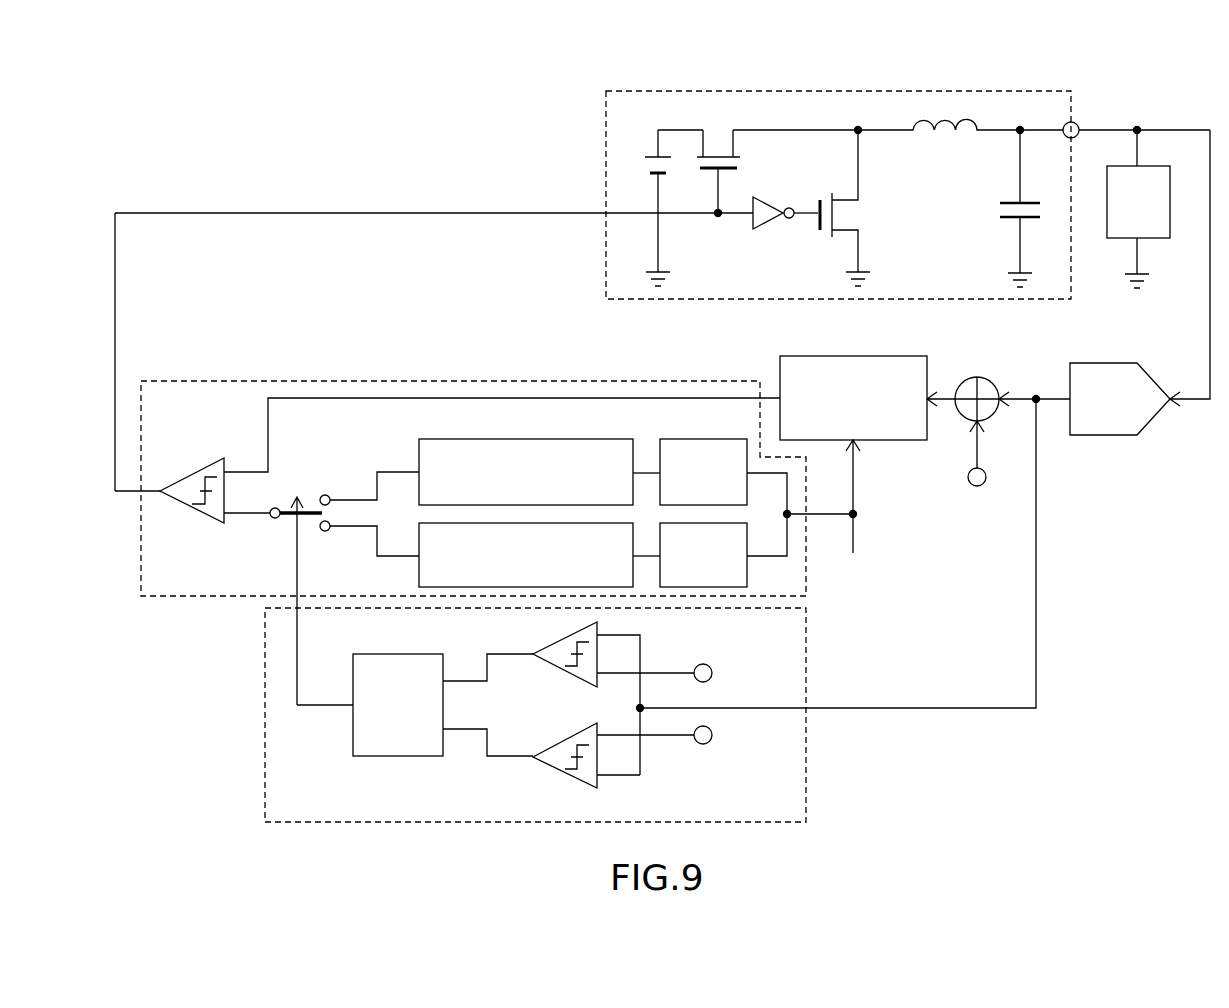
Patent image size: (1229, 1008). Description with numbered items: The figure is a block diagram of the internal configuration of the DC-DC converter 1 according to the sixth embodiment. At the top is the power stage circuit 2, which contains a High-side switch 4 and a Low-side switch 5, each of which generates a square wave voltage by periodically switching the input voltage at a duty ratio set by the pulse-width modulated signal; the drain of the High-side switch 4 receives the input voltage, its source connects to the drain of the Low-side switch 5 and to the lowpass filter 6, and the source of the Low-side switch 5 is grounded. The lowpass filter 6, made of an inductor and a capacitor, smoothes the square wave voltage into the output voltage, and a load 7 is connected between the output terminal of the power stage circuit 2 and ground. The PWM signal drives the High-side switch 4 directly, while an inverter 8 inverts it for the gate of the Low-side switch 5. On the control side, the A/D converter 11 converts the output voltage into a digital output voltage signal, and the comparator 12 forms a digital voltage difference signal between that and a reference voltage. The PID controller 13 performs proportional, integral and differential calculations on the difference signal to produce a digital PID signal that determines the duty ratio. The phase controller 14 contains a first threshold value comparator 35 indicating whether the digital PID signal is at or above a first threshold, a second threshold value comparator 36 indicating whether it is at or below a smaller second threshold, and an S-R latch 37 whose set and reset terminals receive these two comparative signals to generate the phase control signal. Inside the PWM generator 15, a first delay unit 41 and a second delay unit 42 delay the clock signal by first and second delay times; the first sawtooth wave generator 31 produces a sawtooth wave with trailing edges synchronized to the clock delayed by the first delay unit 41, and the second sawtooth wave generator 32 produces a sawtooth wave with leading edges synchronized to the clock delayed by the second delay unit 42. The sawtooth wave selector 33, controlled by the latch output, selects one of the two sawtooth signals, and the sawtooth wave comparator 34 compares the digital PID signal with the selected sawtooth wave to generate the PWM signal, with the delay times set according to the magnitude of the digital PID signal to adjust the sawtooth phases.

The DC-DC converter 1 is at (163, 810).
The power stage circuit 2 is at (1027, 89).
The High-side switch 4 is at (742, 163).
The Low-side switch 5 is at (845, 234).
The lowpass filter 6 is at (977, 153).
The load 7 is at (1107, 223).
The inverter 8 is at (765, 222).
The A/D converter 11 is at (1125, 435).
The comparator 12 is at (990, 382).
The PID controller 13 is at (887, 356).
The phase controller 14 is at (263, 775).
The PWM generator 15 is at (278, 381).
The first sawtooth wave generator 31 is at (575, 439).
The second sawtooth wave generator 32 is at (418, 567).
The sawtooth wave selector 33 is at (297, 490).
The sawtooth wave comparator 34 is at (180, 478).
The first threshold value comparator 35 is at (550, 645).
The second threshold value comparator 36 is at (550, 743).
The S-R latch 37 is at (352, 720).
The first delay unit 41 is at (690, 439).
The second delay unit 42 is at (748, 540).